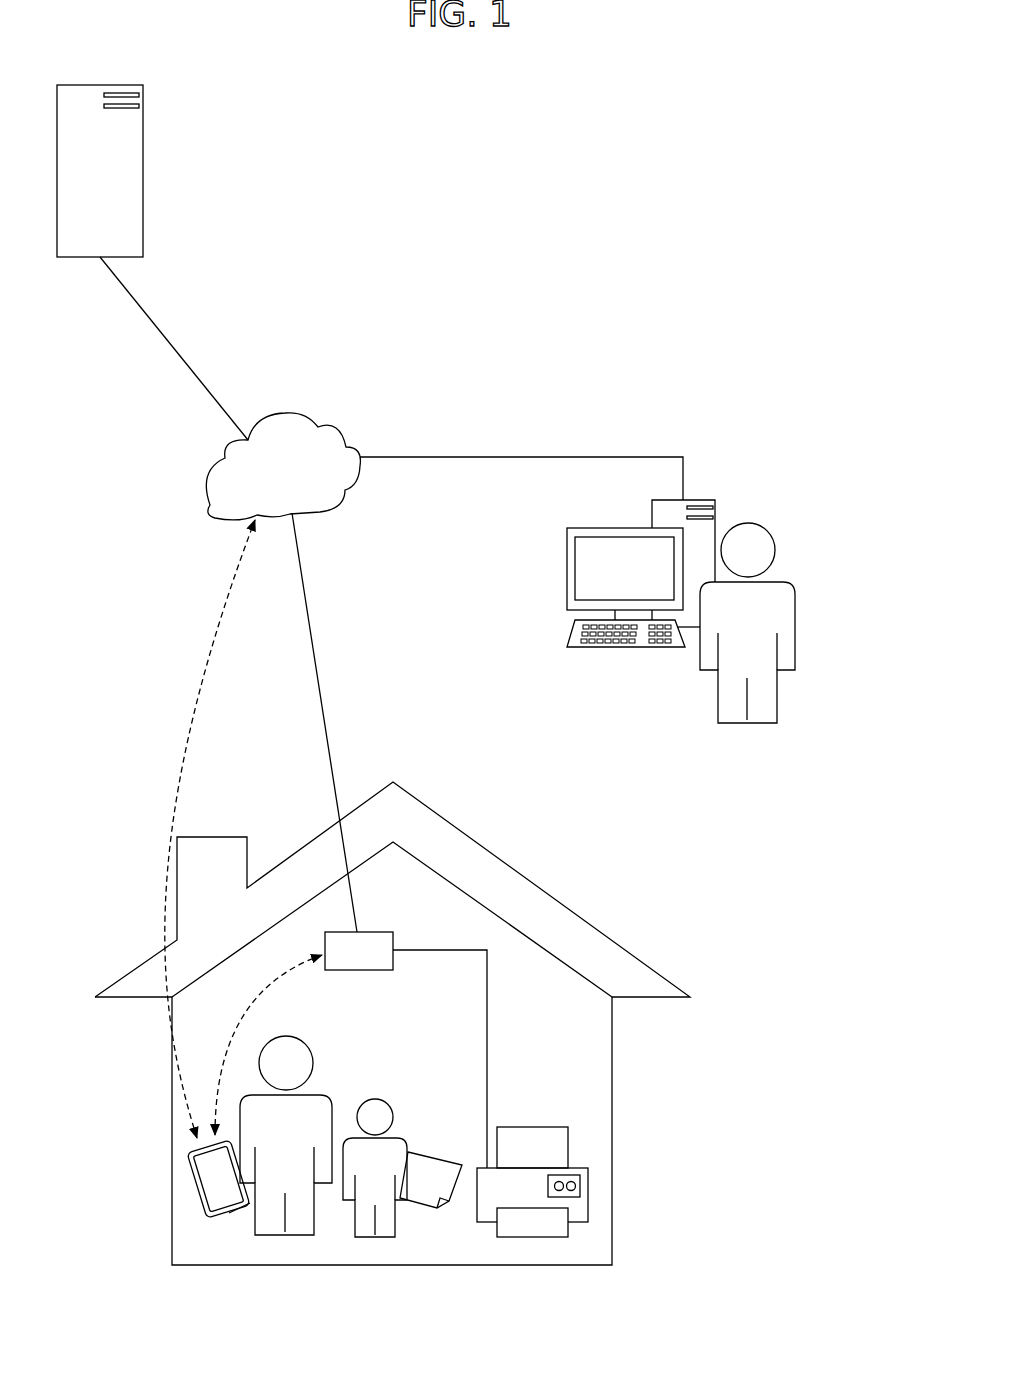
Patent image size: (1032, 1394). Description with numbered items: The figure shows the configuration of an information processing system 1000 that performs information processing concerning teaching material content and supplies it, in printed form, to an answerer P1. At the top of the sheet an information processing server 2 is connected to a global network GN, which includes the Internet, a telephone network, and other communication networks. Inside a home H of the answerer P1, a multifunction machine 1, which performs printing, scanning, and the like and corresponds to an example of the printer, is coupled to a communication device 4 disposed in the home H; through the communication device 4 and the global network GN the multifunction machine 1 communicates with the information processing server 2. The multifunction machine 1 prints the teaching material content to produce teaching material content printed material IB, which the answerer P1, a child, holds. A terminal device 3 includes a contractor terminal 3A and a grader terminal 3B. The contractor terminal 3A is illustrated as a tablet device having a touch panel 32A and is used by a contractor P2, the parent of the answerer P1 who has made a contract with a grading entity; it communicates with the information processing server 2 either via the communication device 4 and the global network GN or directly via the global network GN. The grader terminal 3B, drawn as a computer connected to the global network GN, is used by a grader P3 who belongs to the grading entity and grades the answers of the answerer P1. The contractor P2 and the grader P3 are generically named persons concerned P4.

The information processing system 1000 is at (432, 310).
The information processing server 2 is at (80, 85).
The global network GN is at (285, 432).
The terminal device 3 is at (405, 880).
The grader terminal 3B is at (703, 497).
The contractor terminal 3A is at (197, 1192).
The touch panel 32A is at (228, 1213).
The persons concerned P4 is at (562, 879).
The grader P3 is at (773, 580).
The contractor P2 is at (318, 1095).
The answerer P1 is at (398, 1137).
The home H is at (612, 1060).
The communication device 4 is at (370, 932).
The multifunction machine 1 is at (580, 1168).
The teaching material content printed material IB is at (420, 1210).